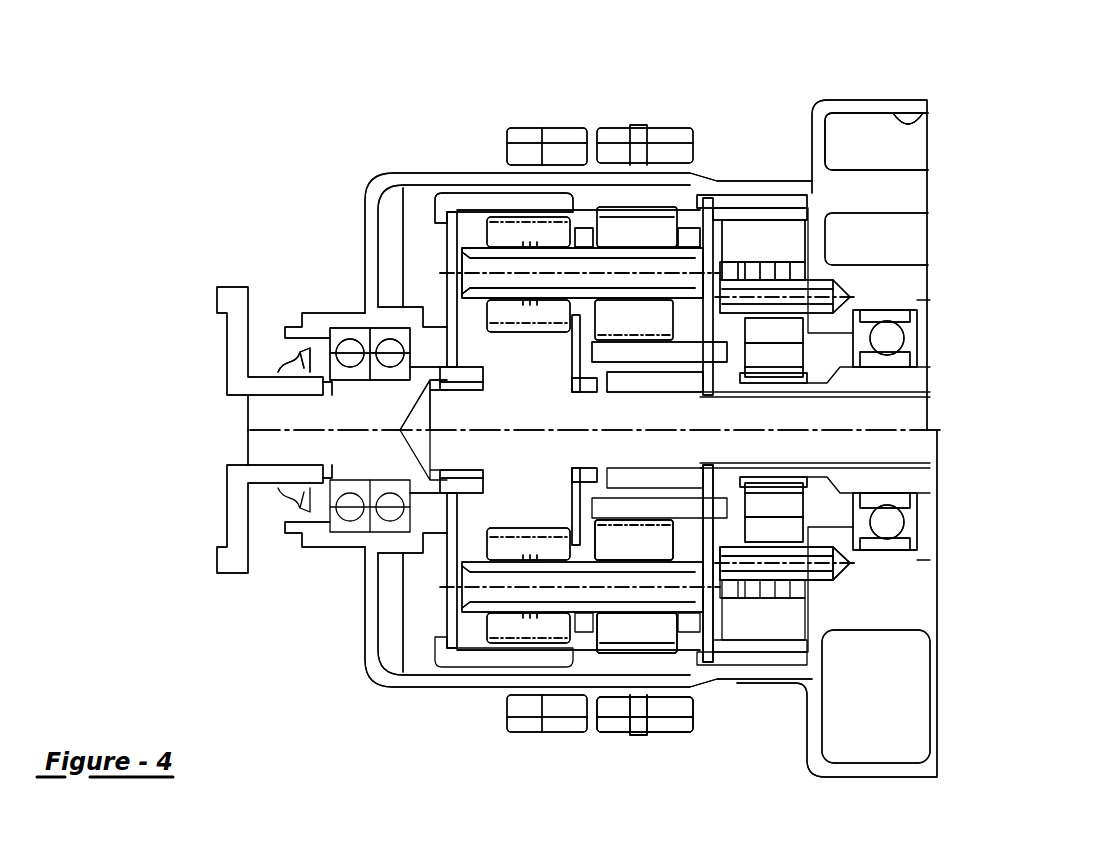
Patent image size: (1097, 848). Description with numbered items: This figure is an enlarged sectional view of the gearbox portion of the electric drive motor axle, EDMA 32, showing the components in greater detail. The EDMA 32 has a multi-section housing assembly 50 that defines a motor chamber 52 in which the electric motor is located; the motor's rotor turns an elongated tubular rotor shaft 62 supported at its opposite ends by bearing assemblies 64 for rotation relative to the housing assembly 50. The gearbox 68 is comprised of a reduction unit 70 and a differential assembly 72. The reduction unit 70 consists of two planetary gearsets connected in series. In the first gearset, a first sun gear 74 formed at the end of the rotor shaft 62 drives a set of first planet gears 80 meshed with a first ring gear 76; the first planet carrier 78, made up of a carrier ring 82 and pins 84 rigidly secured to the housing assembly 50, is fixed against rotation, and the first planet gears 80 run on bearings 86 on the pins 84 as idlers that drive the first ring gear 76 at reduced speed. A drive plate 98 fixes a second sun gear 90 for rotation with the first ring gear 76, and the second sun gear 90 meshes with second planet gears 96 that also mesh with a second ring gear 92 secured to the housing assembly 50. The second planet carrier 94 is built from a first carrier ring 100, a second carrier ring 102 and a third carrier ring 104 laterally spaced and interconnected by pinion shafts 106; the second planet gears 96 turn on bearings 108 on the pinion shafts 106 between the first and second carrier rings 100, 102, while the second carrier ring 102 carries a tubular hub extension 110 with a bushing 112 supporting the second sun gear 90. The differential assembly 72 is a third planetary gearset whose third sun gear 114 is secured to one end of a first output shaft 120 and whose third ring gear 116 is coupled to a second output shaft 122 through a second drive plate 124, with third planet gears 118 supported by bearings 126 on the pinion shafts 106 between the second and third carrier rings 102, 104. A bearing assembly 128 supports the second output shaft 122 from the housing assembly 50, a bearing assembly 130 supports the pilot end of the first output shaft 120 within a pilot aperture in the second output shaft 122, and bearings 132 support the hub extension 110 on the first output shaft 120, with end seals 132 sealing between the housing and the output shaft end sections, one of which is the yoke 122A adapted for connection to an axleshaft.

The EDMA 32 is at (1002, 219).
The multi-section housing assembly 50 is at (862, 102).
The motor chamber 52 is at (933, 128).
The rotor shaft 62 is at (906, 382).
The bearing assemblies 64 is at (890, 528).
The gearbox 68 is at (420, 649).
The reduction unit 70 is at (723, 196).
The differential assembly 72 is at (456, 202).
The first sun gear 74 is at (772, 384).
The first ring gear 76 is at (763, 655).
The first planet carrier 78 is at (729, 597).
The first planet gears 80 is at (783, 245).
The carrier ring 82 is at (733, 266).
The pins 84 is at (813, 282).
The bearings 86 is at (787, 587).
The second sun gear 90 is at (717, 355).
The second ring gear 92 is at (608, 192).
The second planet carrier 94 is at (688, 232).
The second planet gears 96 is at (621, 633).
The drive plate 98 is at (707, 650).
The first carrier ring 100 is at (695, 550).
The second carrier ring 102 is at (580, 236).
The third carrier ring 104 is at (468, 623).
The pinion shafts 106 is at (583, 253).
The bearings 108 is at (650, 245).
The tubular hub extension 110 is at (612, 378).
The bushing 112 is at (633, 497).
The third sun gear 114 is at (541, 386).
The third ring gear 116 is at (487, 203).
The third planet gears 118 is at (523, 627).
The first output shaft 120 is at (920, 418).
The second output shaft 122 is at (278, 418).
The yoke 122A is at (228, 573).
The second drive plate 124 is at (543, 270).
The bearings 126 is at (512, 558).
The bearing assembly 128 is at (351, 344).
The bearing assembly 130 is at (458, 387).
The bearings 132 is at (303, 352).